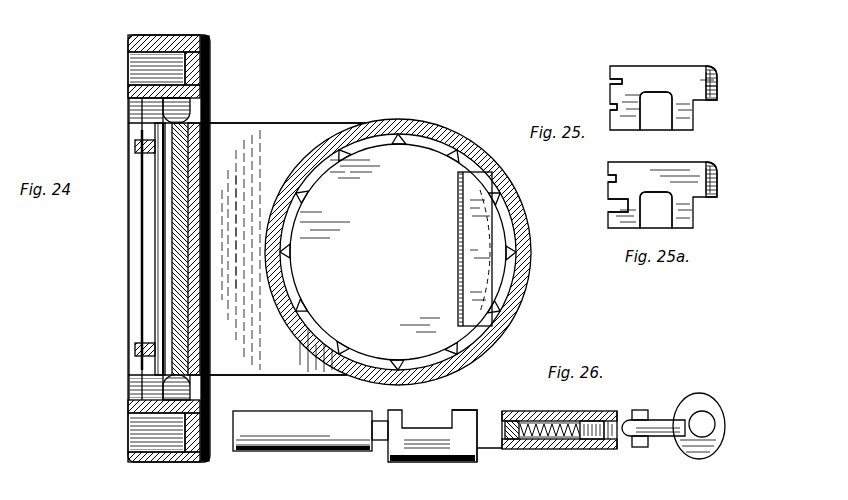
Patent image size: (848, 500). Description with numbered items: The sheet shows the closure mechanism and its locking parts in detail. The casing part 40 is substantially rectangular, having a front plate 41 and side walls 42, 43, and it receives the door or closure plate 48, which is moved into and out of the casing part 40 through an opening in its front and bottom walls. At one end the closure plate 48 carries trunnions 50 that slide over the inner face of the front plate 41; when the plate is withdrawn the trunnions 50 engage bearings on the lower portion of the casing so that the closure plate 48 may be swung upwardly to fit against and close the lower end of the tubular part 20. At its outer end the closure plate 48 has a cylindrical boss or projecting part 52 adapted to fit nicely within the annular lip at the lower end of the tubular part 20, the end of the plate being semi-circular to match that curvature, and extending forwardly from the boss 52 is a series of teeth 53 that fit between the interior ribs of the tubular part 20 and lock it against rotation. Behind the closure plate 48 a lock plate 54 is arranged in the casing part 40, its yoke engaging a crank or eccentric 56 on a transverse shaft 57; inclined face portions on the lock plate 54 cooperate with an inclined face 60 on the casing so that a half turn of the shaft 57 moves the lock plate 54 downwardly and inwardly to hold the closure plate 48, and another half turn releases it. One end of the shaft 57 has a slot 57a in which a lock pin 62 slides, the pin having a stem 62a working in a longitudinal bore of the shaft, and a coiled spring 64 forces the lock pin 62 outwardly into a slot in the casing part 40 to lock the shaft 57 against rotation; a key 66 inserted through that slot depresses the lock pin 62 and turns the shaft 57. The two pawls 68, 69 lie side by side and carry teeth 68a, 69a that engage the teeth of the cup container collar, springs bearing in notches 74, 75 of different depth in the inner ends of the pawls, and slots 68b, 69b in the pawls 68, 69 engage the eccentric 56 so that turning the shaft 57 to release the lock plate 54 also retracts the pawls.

In FIG. 24, the tubular part 20 is at (512, 305).
In FIG. 24, the casing part 40 is at (155, 248).
In FIG. 24, the front plate 41 is at (206, 78).
In FIG. 24, the side wall 42 is at (172, 35).
In FIG. 24, the side wall 43 is at (162, 462).
In FIG. 24, the door or closure plate 48 is at (288, 249).
In FIG. 24, the trunnions 50 is at (195, 112).
In FIG. 24, the cylindrical boss or projecting part 52 is at (398, 252).
In FIG. 24, the teeth 53 is at (512, 240).
In FIG. 24, the lock plate 54 is at (160, 273).
In FIG. 26, the crank or eccentric 56 is at (436, 462).
In FIG. 26, the transverse shaft 57 is at (472, 412).
In FIG. 26, the slot 57a is at (590, 418).
In FIG. 24, the inclined face 60 is at (145, 308).
In FIG. 26, the lock pin 62 is at (600, 449).
In FIG. 26, the stem 62a is at (544, 449).
In FIG. 26, the coiled spring 64 is at (520, 420).
In FIG. 26, the key 66 is at (660, 420).
In FIG. 25, the pawl 68 is at (672, 70).
In FIG. 25, the tooth 68a is at (718, 88).
In FIG. 25, the slot 68b is at (657, 111).
In FIG. 25a, the pawl 69 is at (652, 168).
In FIG. 25a, the tooth 69a is at (718, 174).
In FIG. 25a, the slot 69b is at (658, 210).
In FIG. 25, the notch 74 is at (608, 81).
In FIG. 25a, the notch 74 is at (606, 203).
In FIG. 25, the notch 75 is at (608, 107).
In FIG. 25a, the notch 75 is at (606, 180).